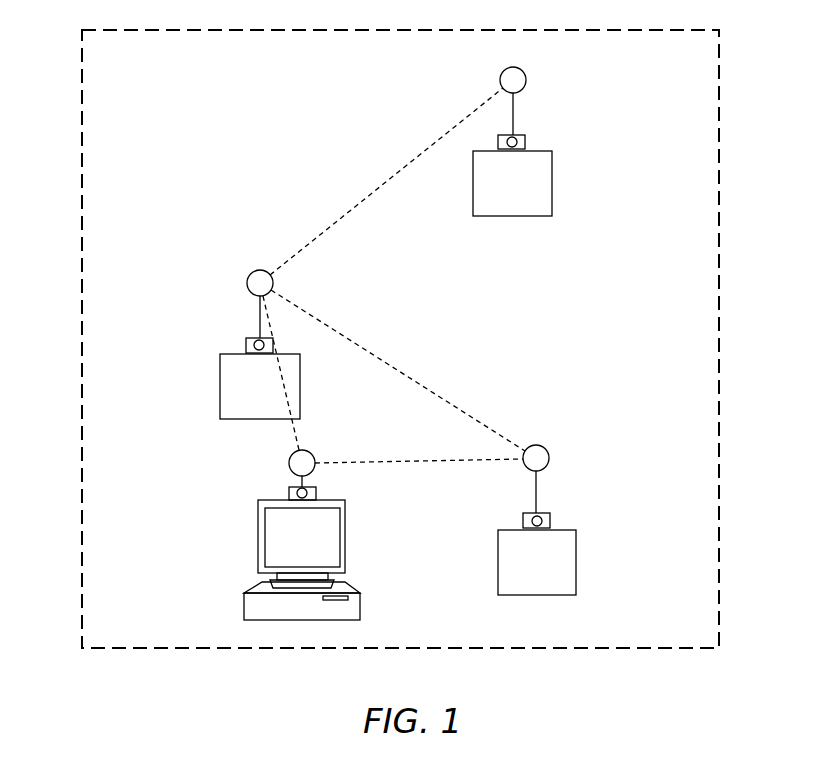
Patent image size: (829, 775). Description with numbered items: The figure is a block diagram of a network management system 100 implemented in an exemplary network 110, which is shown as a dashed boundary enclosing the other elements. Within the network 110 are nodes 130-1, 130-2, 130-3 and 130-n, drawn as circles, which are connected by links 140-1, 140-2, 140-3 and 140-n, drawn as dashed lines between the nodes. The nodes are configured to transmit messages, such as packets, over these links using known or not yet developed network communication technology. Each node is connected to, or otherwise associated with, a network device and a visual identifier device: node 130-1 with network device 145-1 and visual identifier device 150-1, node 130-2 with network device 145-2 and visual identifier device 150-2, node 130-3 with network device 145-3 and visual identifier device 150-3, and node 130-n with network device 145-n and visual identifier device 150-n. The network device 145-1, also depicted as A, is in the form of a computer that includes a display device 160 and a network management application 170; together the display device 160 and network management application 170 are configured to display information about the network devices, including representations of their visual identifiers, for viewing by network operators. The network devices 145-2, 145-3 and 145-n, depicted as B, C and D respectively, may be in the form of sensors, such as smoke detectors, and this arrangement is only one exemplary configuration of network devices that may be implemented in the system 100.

The network management system 100 is at (63, 54).
The network 110 is at (719, 311).
The node 130-n is at (500, 80).
The node 130-3 is at (247, 283).
The node 130-1 is at (315, 469).
The node 130-2 is at (549, 458).
The link 140-n is at (379, 190).
The link 140-3 is at (401, 373).
The link 140-1 is at (300, 435).
The link 140-2 is at (468, 461).
The network device 145-n is at (552, 183).
The network device 145-3 is at (220, 387).
The network device 145-2 is at (576, 563).
The network device 145-1 is at (296, 564).
The visual identifier device 150-n is at (525, 142).
The visual identifier device 150-3 is at (246, 345).
The visual identifier device 150-1 is at (290, 492).
The visual identifier device 150-2 is at (550, 520).
The display device 160 is at (321, 542).
The network management application 170 is at (351, 607).